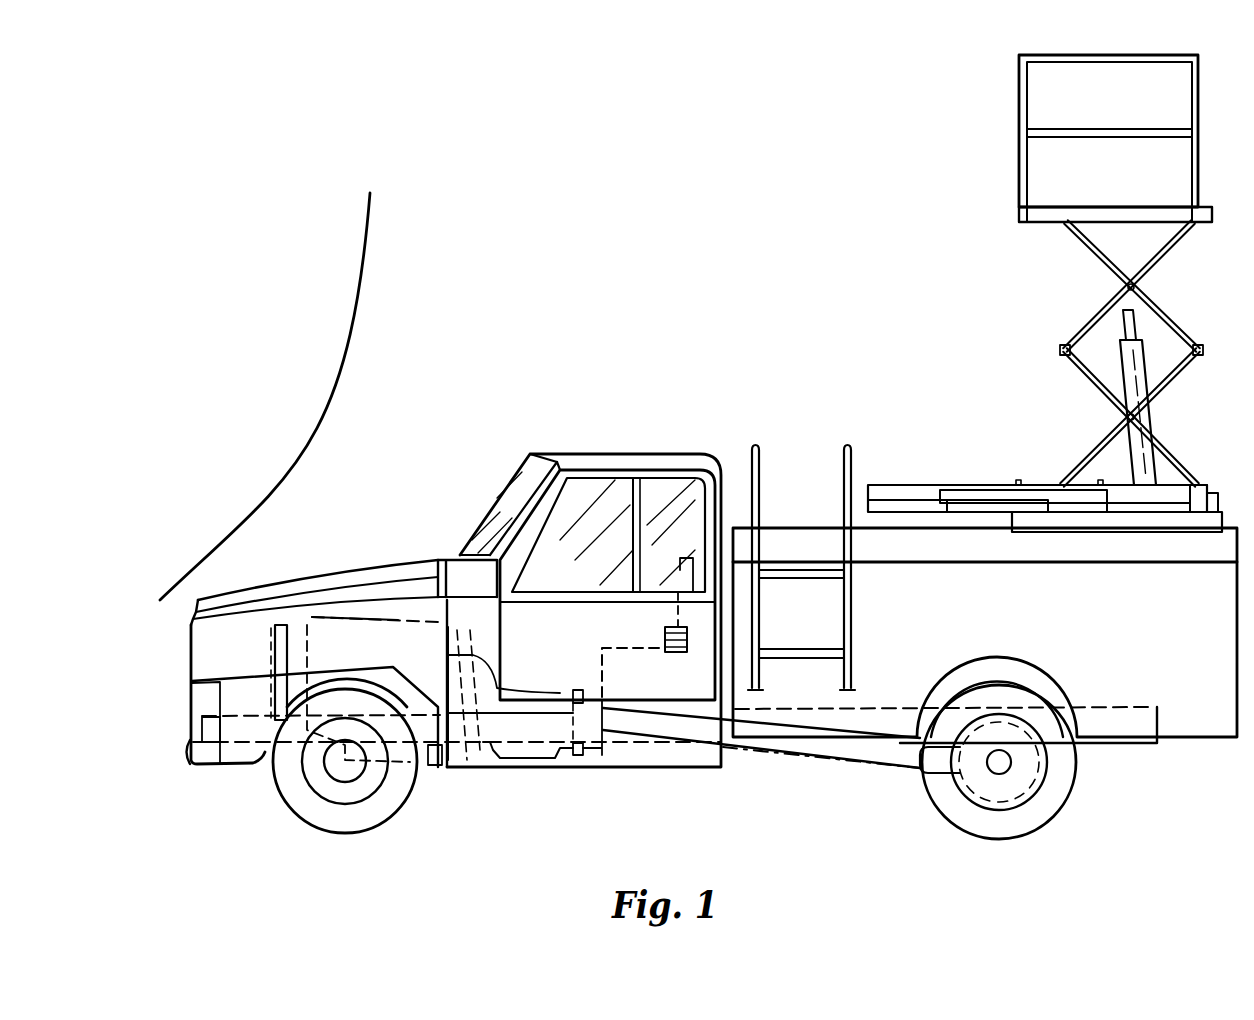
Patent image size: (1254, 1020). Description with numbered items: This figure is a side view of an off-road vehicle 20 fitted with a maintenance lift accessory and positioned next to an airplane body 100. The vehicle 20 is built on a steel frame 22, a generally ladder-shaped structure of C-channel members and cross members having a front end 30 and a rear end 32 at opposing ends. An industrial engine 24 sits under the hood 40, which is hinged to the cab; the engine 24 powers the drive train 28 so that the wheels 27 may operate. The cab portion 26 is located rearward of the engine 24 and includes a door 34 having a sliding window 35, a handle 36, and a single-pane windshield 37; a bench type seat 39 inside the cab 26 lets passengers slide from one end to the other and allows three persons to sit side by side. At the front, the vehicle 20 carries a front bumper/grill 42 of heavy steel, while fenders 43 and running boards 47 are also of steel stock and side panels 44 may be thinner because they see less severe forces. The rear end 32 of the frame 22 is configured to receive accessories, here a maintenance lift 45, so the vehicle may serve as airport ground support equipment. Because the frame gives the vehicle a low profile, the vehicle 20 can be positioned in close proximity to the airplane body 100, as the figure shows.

The airplane body 100 is at (341, 352).
The off-road vehicle 20 is at (470, 450).
The frame 22 is at (895, 680).
The engine 24 is at (388, 605).
The cab portion 26 is at (600, 430).
The wheels 27 is at (405, 802).
The drive train 28 is at (532, 780).
The front end 30 is at (262, 765).
The rear end 32 is at (830, 782).
The door 34 is at (476, 580).
The window 35 is at (594, 543).
The handle 36 is at (665, 640).
The windshield 37 is at (487, 530).
The seat 39 is at (600, 673).
The hood 40 is at (303, 575).
The front bumper/grill 42 is at (187, 740).
The fenders 43 is at (258, 711).
The side panels 44 is at (255, 660).
The maintenance lift 45 is at (1065, 628).
The running boards 47 is at (670, 758).